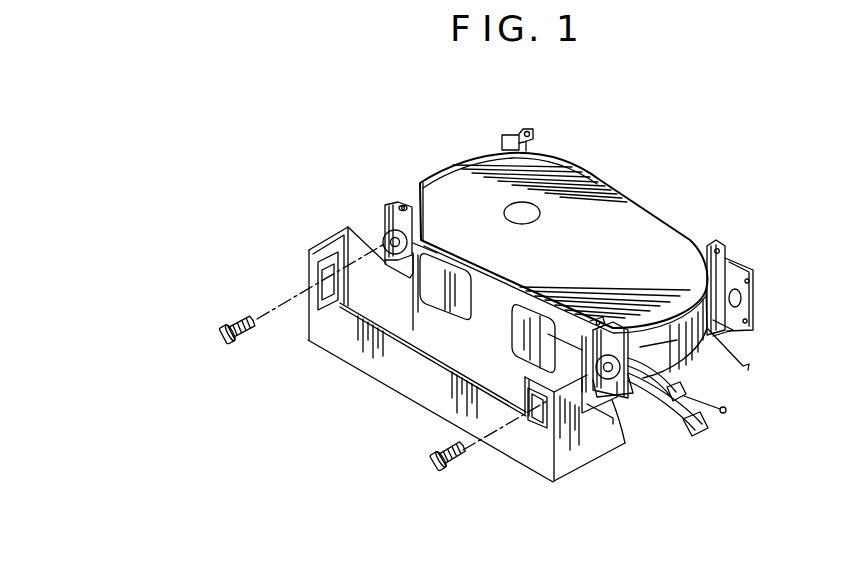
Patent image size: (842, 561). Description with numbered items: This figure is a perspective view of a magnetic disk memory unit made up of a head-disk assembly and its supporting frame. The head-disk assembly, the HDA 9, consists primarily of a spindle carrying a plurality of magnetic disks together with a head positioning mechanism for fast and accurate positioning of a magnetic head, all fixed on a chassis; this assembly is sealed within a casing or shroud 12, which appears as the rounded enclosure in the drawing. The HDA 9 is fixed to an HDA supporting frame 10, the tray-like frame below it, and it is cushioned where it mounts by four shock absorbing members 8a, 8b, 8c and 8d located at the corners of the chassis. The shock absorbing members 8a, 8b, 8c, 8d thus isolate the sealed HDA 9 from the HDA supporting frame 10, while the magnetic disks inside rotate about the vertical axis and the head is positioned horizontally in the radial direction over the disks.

The shock absorbing member 8a is at (626, 392).
The shock absorbing member 8b is at (385, 220).
The shock absorbing member 8c is at (518, 132).
The shock absorbing member 8d is at (752, 298).
The HDA 9 is at (647, 233).
The HDA supporting frame 10 is at (595, 426).
The casing (shroud) 12 is at (630, 192).